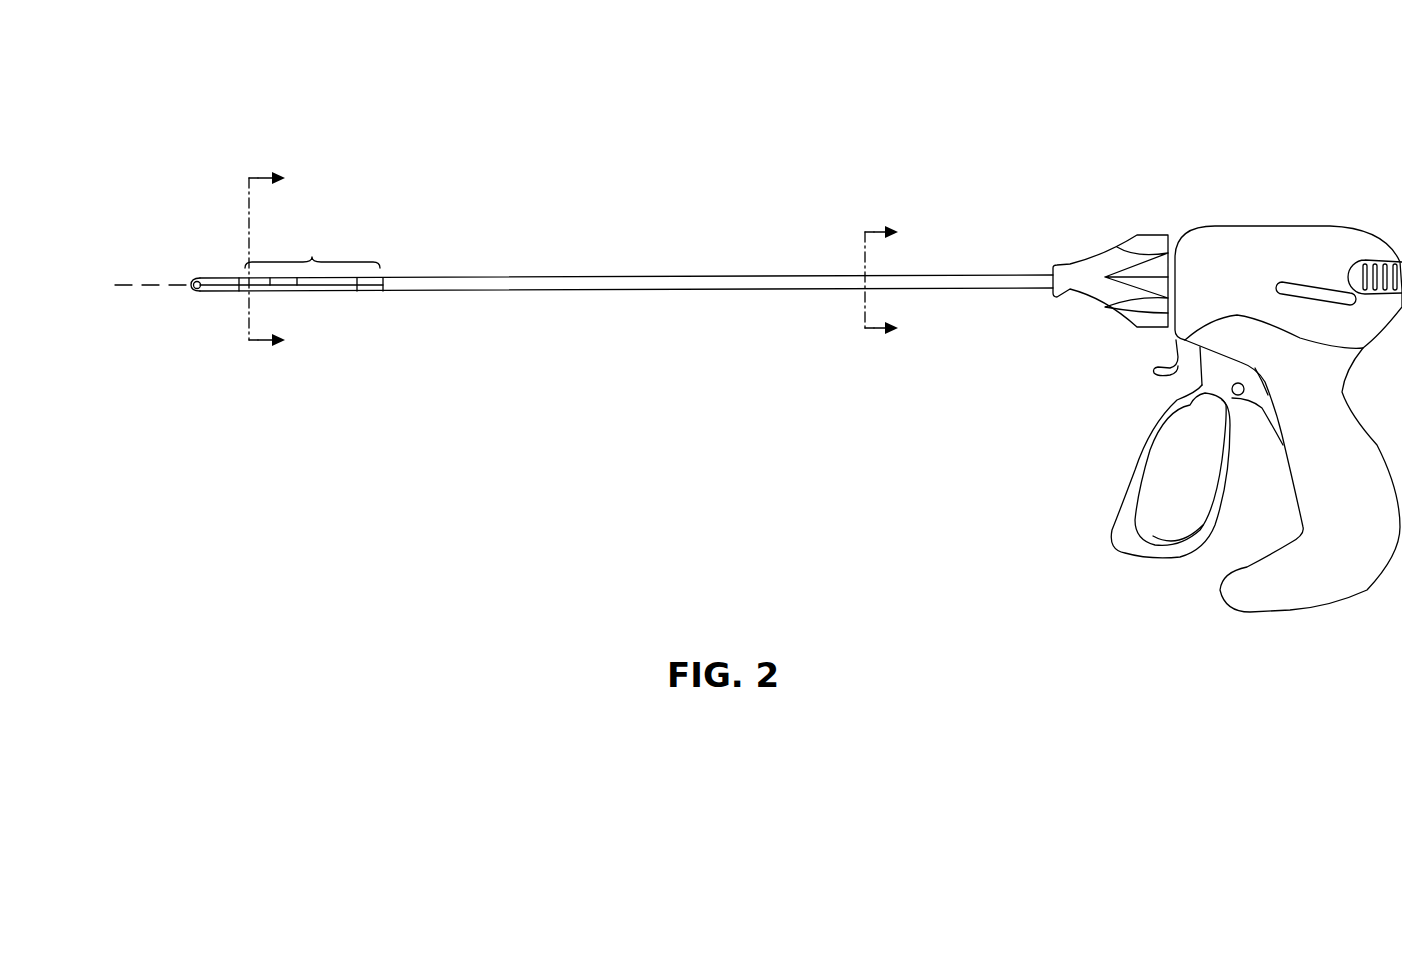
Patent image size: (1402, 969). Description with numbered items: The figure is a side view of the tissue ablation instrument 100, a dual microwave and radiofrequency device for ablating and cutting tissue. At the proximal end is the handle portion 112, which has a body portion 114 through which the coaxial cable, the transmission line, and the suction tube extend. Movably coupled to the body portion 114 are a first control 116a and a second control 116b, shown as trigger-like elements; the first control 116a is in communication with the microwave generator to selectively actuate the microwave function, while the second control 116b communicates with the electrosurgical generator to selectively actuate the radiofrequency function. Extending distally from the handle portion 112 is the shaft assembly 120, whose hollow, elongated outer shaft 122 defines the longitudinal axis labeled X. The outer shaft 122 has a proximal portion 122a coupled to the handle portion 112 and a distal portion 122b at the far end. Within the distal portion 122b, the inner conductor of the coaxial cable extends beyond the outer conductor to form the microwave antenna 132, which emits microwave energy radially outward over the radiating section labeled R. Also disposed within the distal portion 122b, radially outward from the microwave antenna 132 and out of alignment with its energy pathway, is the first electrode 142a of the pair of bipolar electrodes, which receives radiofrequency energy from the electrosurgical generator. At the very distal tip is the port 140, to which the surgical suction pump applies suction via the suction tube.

The tissue ablation instrument 100 is at (798, 118).
The handle portion 112 is at (1218, 216).
The body portion 114 is at (1303, 242).
The first control 116a is at (1153, 367).
The second control 116b is at (1138, 456).
The shaft assembly 120 is at (665, 304).
The outer shaft 122 is at (625, 268).
The proximal portion of outer shaft 122a is at (1045, 270).
The distal portion of outer shaft 122b is at (232, 285).
The microwave antenna 132 is at (360, 283).
The port 140 is at (203, 293).
The first electrode 142a is at (285, 278).